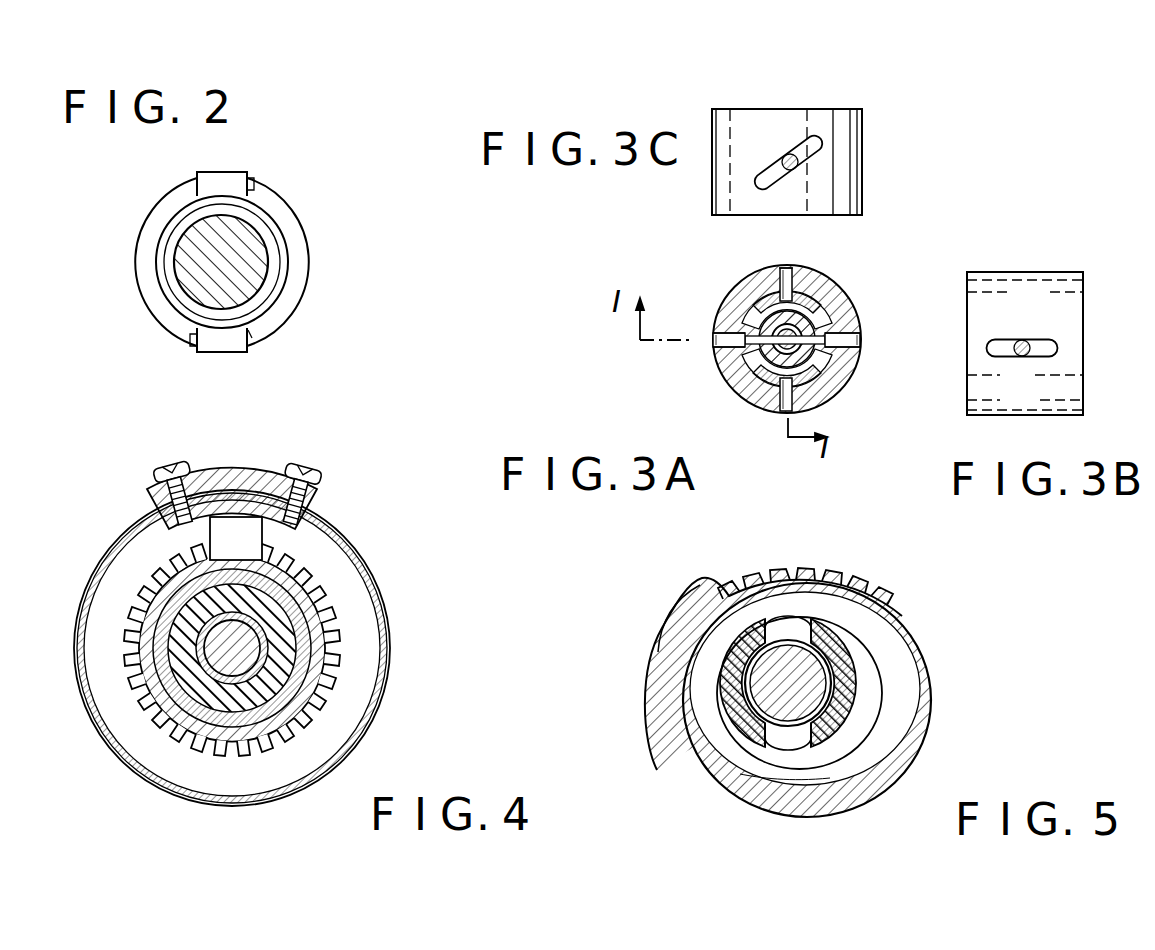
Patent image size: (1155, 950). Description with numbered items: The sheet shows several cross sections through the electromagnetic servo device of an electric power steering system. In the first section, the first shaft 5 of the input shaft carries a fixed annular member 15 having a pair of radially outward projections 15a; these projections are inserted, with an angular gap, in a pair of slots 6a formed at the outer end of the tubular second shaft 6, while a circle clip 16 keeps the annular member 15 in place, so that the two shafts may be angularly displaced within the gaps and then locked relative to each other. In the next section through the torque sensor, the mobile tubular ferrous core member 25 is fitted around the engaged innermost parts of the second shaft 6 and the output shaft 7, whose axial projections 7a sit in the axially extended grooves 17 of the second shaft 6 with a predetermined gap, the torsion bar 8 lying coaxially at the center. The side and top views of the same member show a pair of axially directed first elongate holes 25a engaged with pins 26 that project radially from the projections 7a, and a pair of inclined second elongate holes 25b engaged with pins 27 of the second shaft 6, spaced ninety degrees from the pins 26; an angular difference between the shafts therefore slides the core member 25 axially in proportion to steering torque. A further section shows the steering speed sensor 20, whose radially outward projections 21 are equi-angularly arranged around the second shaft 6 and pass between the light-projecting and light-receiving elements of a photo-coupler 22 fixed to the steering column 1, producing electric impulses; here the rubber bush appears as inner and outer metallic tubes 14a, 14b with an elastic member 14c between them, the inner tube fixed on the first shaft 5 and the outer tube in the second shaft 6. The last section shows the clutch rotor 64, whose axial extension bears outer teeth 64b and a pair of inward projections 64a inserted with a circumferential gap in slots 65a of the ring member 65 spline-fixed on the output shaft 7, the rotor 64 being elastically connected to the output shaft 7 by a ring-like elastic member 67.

In FIG. 4, the steering column 1 is at (350, 573).
In FIG. 2, the first shaft 5 is at (256, 248).
In FIG. 4, the first shaft 5 is at (238, 660).
In FIG. 2, the second shaft 6 is at (292, 297).
In FIG. 3A, the second shaft 6 is at (857, 318).
In FIG. 4, the second shaft 6 is at (303, 703).
In FIG. 2, the slots 6a is at (252, 182).
In FIG. 5, the output shaft 7 is at (795, 695).
In FIG. 3A, the axially extended projections 7a is at (752, 316).
In FIG. 3A, the torsion bar 8 is at (807, 355).
In FIG. 4, the inner metallic tube 14a is at (175, 740).
In FIG. 4, the outer metallic tube 14b is at (266, 727).
In FIG. 4, the elastic member 14c is at (233, 707).
In FIG. 2, the annular member 15 is at (158, 284).
In FIG. 2, the radially outward projections 15a is at (229, 178).
In FIG. 2, the circle clip 16 is at (252, 342).
In FIG. 3A, the axially extended grooves 17 is at (833, 307).
In FIG. 4, the steering speed sensor 20 is at (183, 537).
In FIG. 4, the radially outward projections 21 is at (293, 560).
In FIG. 4, the photo-coupler 22 is at (248, 552).
In FIG. 3C, the mobile tubular ferrous core member 25 is at (855, 132).
In FIG. 3B, the mobile tubular ferrous core member 25 is at (1073, 298).
In FIG. 3A, the mobile tubular ferrous core member 25 is at (827, 285).
In FIG. 3B, the first elongate holes 25a is at (1050, 342).
In FIG. 3A, the first elongate holes 25a is at (722, 348).
In FIG. 3C, the second elongate holes 25b is at (762, 167).
In FIG. 3A, the second elongate holes 25b is at (782, 280).
In FIG. 3C, the pins 26 is at (795, 165).
In FIG. 3A, the pins 26 is at (782, 268).
In FIG. 3B, the pins 27 is at (1025, 357).
In FIG. 3A, the pins 27 is at (712, 340).
In FIG. 5, the rotor 64 is at (853, 750).
In FIG. 5, the projections 64a is at (788, 635).
In FIG. 5, the outer teeth 64b is at (853, 570).
In FIG. 5, the ring member 65 is at (840, 690).
In FIG. 5, the slots 65a is at (813, 643).
In FIG. 5, the ring-like elastic member 67 is at (860, 717).